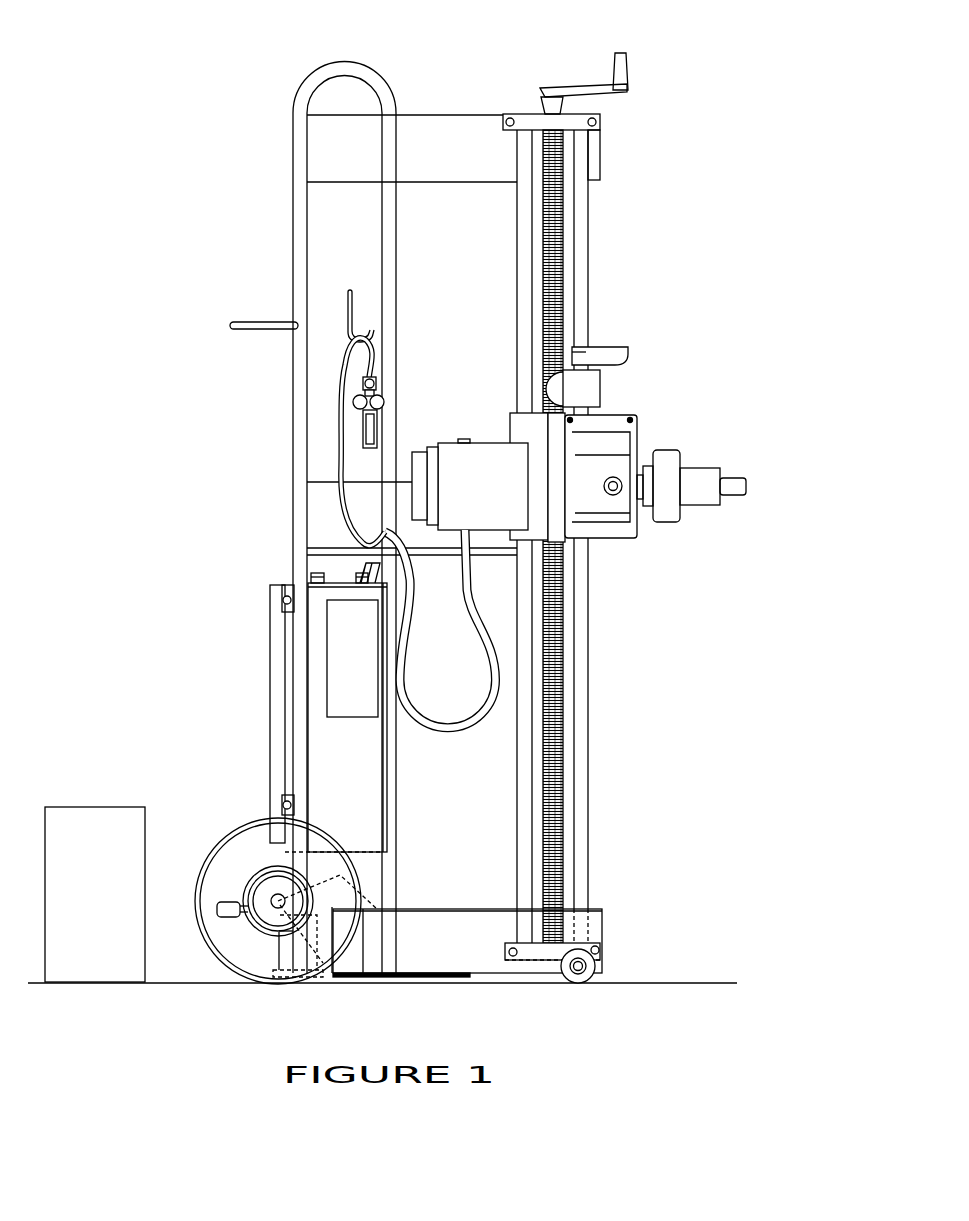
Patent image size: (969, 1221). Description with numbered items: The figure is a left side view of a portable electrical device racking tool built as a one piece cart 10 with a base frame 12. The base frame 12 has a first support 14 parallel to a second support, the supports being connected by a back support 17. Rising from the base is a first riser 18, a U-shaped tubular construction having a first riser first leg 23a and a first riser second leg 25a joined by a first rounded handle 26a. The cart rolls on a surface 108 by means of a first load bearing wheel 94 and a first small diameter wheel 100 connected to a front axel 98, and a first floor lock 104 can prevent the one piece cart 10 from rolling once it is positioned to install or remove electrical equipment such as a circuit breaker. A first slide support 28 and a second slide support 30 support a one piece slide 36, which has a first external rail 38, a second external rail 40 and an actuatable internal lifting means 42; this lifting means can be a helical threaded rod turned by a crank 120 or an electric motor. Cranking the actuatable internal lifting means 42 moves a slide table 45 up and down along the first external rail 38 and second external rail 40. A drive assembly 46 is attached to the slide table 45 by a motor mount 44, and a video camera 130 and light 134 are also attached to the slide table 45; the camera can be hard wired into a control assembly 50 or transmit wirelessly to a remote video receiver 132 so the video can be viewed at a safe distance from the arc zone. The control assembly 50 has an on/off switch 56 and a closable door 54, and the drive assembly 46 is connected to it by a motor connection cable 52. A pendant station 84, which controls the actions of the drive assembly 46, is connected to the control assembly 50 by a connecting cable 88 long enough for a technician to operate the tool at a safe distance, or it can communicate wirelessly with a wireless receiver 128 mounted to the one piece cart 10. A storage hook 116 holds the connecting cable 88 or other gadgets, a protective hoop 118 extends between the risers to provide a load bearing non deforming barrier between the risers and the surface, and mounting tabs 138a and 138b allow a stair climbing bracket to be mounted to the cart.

The one piece cart 10 is at (233, 75).
The base frame 12 is at (442, 990).
The first support 14 is at (485, 928).
The back support 17 is at (343, 965).
The first riser 18 is at (372, 502).
The first riser first leg 23a is at (302, 210).
The first riser second leg 25a is at (387, 210).
The first rounded handle 26a is at (342, 70).
The first slide support 28 is at (320, 515).
The second slide support 30 is at (452, 132).
The one piece slide 36 is at (565, 488).
The first external rail 38 is at (523, 218).
The second external rail 40 is at (582, 207).
The actuatable internal lifting means 42 is at (558, 165).
The motor mount 44 is at (605, 430).
The slide table 45 is at (523, 423).
The drive assembly 46 is at (658, 427).
The control assembly 50 is at (280, 701).
The motor connection cable 52 is at (448, 730).
The closable door 54 is at (270, 657).
The on/off switch 56 is at (310, 573).
The pendant station 84 is at (384, 398).
The connecting cable 88 is at (340, 417).
The first load bearing wheel 94 is at (268, 896).
The front axel 98 is at (587, 963).
The first small diameter wheel 100 is at (585, 975).
The first floor lock 104 is at (290, 952).
The surface 108 is at (672, 982).
The storage hook 116 is at (352, 310).
The protective hoop 118 is at (270, 325).
The crank 120 is at (622, 55).
The wireless receiver 128 is at (340, 642).
The video camera 130 is at (613, 348).
The remote video receiver 132 is at (102, 823).
The light 134 is at (587, 387).
The mounting tab 138a is at (282, 598).
The mounting tab 138b is at (283, 803).